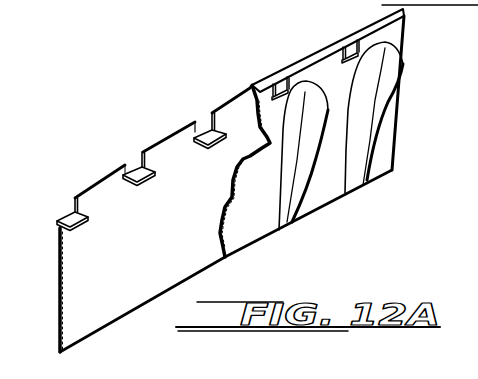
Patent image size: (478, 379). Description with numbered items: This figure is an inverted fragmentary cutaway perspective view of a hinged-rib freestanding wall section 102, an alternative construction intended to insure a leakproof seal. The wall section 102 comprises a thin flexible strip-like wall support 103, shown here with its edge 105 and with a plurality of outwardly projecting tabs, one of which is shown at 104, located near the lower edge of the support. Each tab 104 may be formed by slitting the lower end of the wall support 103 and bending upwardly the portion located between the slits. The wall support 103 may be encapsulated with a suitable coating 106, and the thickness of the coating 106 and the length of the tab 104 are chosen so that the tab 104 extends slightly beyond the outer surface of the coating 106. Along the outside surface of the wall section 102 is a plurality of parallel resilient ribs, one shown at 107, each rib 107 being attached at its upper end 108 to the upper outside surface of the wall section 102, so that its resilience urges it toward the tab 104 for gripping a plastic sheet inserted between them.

The wall section 102 is at (303, 41).
The wall support 103 is at (120, 305).
The projecting tab 104 is at (137, 172).
The upper edge 105 is at (100, 182).
The coating 106 is at (245, 242).
The resilient rib 107 is at (282, 172).
The upper end of rib 108 is at (290, 224).